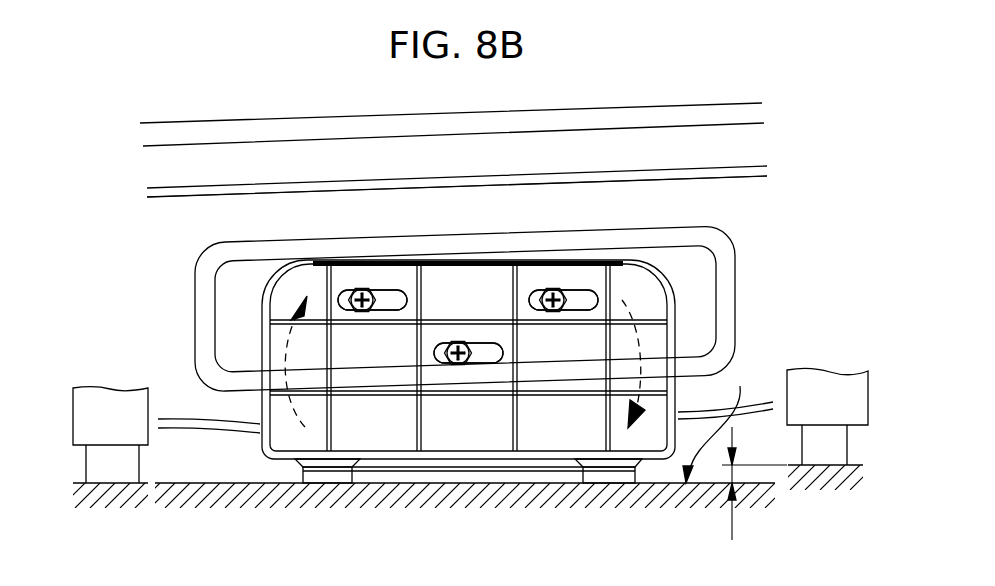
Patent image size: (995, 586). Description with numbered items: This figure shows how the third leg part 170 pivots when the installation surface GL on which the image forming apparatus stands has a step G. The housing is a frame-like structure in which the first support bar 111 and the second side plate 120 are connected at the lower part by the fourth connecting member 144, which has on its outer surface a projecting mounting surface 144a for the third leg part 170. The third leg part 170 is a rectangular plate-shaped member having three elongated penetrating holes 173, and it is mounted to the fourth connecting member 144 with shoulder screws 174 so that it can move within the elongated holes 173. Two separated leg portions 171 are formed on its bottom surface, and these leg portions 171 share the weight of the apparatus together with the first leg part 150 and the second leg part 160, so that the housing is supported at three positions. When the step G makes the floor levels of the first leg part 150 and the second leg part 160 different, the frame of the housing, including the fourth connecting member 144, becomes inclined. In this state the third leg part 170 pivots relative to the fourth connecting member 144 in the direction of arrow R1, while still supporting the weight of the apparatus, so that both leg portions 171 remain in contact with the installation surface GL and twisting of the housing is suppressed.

The first support bar 111 is at (97, 405).
The first leg part 150 is at (118, 470).
The second side plate 120 is at (803, 393).
The second leg part 160 is at (820, 442).
The fourth connecting member 144 is at (185, 253).
The projecting mounting surface 144a is at (228, 310).
The third leg part 170 is at (660, 280).
The leg portions 171 is at (323, 472).
The elongated penetrating holes 173 is at (392, 306).
The shoulder screws 174 is at (355, 288).
The pivoting direction arrow R1 is at (473, 362).
The installation surface GL is at (721, 423).
The step G is at (749, 483).